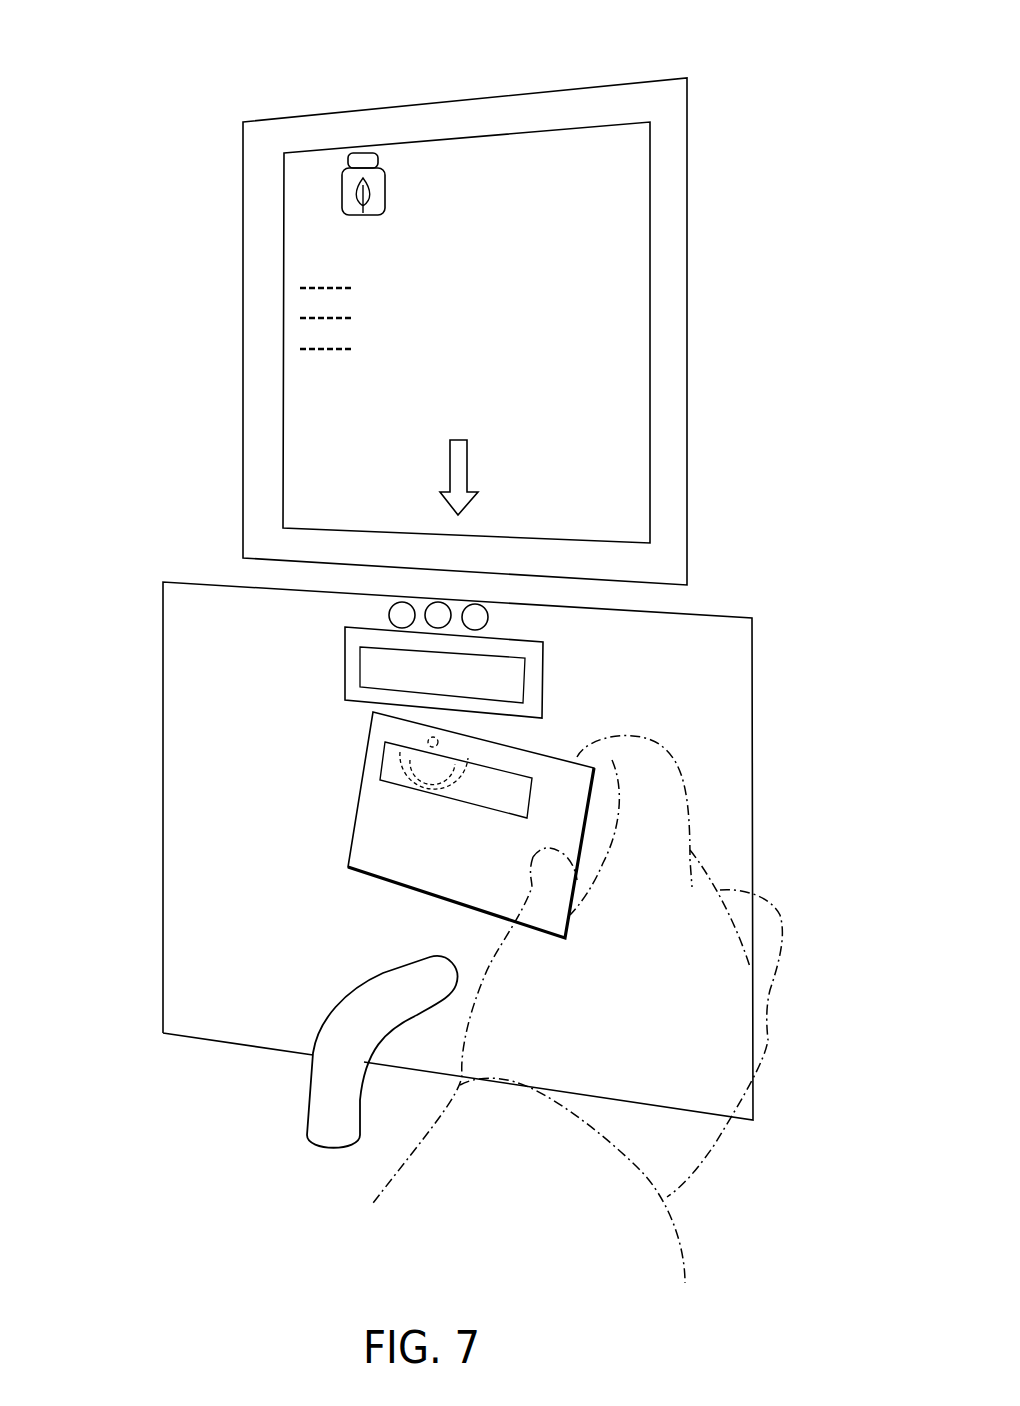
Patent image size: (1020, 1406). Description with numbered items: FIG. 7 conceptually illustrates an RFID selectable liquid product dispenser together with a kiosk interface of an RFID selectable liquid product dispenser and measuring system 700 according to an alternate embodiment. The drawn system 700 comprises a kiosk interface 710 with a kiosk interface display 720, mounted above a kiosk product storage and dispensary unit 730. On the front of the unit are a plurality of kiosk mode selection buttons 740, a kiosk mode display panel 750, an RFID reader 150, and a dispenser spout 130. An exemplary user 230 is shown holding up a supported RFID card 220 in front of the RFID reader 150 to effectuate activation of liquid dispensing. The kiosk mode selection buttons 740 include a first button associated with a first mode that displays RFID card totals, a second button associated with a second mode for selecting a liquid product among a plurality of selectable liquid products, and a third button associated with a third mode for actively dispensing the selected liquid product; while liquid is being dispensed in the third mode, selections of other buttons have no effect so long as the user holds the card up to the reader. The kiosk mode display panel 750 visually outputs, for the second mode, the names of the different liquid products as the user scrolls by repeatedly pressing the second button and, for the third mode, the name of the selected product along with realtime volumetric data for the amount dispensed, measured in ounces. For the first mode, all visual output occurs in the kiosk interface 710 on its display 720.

The RFID selectable liquid product dispenser and measuring system 700 is at (236, 68).
The kiosk interface 710 is at (214, 356).
The kiosk interface display 720 is at (650, 245).
The kiosk product storage and dispensary unit 730 is at (136, 579).
The kiosk mode selection buttons 740 is at (488, 617).
The kiosk mode display panel 750 is at (360, 665).
The RFID reader 150 is at (380, 778).
The supported RFID card 220 is at (350, 835).
The dispenser spout 130 is at (307, 1110).
The user 230 is at (685, 1285).